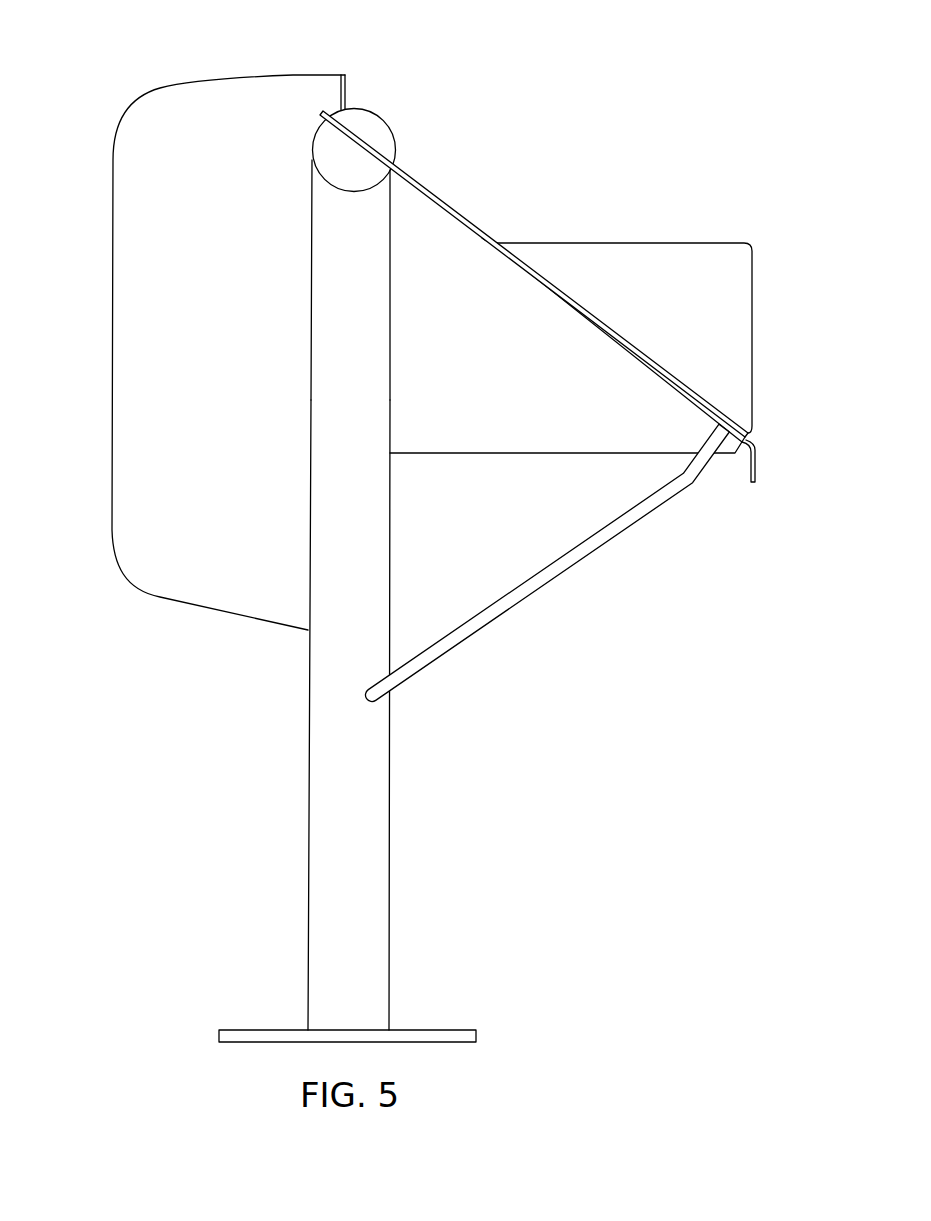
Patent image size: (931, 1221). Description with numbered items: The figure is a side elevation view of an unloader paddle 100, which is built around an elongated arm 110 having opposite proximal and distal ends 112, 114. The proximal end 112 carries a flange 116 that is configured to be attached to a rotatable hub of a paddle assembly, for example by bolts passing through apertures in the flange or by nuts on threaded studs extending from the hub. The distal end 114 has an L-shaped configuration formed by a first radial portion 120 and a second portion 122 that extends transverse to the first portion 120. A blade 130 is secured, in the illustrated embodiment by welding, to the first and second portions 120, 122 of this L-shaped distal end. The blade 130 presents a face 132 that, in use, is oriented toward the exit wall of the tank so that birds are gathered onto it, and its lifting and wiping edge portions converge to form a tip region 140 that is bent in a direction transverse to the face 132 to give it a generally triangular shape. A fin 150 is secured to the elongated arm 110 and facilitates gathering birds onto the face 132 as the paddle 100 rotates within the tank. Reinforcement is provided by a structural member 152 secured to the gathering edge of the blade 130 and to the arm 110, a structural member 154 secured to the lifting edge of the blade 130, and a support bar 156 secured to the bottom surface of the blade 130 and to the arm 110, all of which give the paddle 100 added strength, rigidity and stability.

The unloader paddle 100 is at (470, 74).
The elongated arm 110 is at (390, 845).
The proximal end 112 is at (371, 1001).
The distal end 114 is at (327, 238).
The flange 116 is at (465, 1030).
The first radial portion 120 is at (360, 107).
The second portion 122 is at (320, 185).
The blade 130 is at (432, 190).
The face 132 is at (470, 221).
The tip region 140 is at (688, 240).
The fin 150 is at (112, 376).
The structural member 152 is at (460, 437).
The structural member 154 is at (757, 465).
The support bar 156 is at (542, 588).